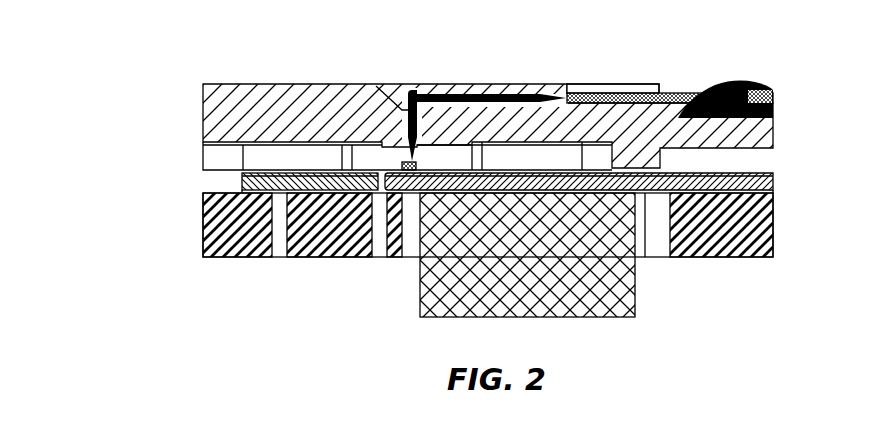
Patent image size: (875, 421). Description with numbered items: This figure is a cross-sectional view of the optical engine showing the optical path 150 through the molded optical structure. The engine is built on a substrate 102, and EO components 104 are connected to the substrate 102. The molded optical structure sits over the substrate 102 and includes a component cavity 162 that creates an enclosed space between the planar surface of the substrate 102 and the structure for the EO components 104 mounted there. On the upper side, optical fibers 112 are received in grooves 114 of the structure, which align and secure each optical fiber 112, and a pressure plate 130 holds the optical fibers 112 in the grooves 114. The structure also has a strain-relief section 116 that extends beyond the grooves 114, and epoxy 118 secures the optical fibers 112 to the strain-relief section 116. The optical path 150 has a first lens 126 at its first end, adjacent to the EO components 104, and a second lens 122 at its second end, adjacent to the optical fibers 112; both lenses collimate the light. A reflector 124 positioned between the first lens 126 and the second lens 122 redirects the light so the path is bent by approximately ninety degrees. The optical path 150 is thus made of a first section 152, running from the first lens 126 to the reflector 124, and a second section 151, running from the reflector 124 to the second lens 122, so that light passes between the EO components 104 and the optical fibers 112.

The substrate 102 is at (458, 247).
The EO components 104 is at (392, 202).
The optical fibers 112 is at (774, 98).
The grooves 114 is at (618, 103).
The strain-relief section 116 is at (730, 148).
The epoxy 118 is at (757, 82).
The second lens 122 is at (478, 94).
The reflector 124 is at (413, 98).
The first lens 126 is at (417, 147).
The pressure plate 130 is at (607, 85).
The optical path 150 is at (566, 96).
The second section 151 is at (470, 95).
The first section 152 is at (405, 110).
The component cavity 162 is at (352, 230).